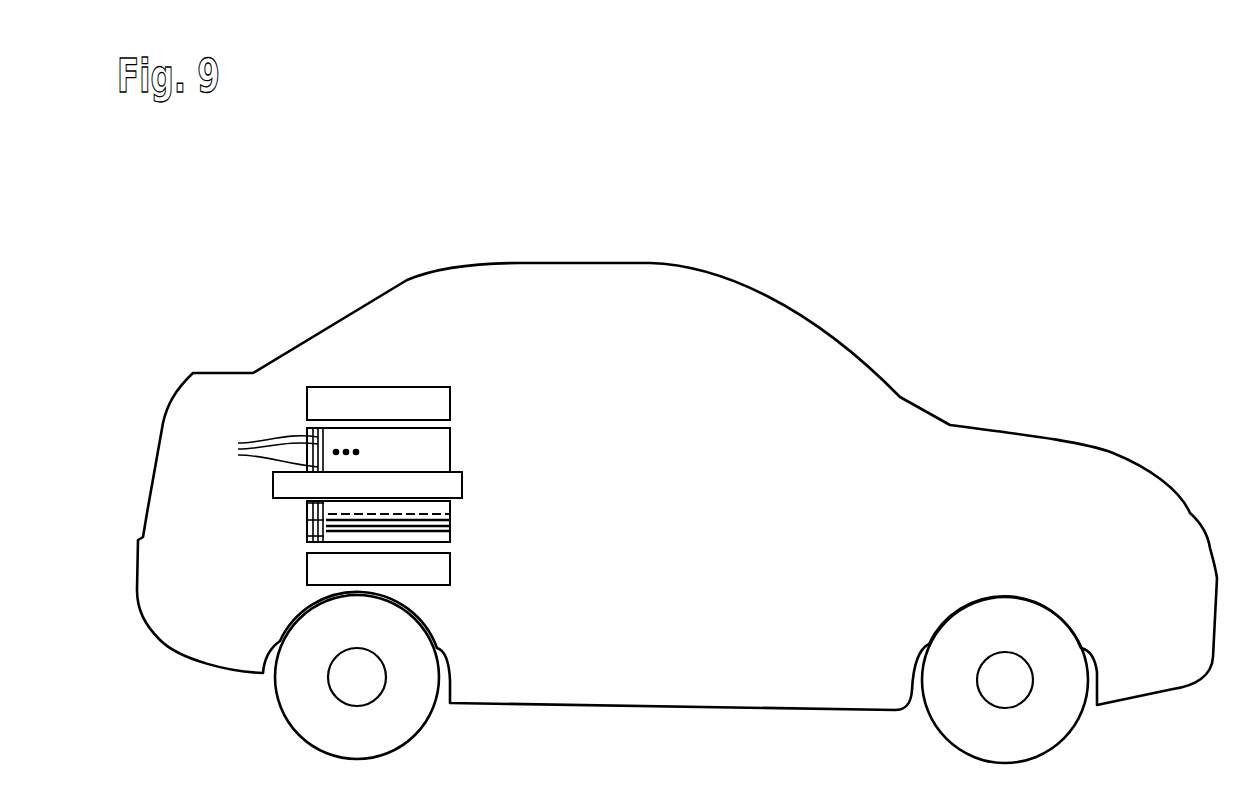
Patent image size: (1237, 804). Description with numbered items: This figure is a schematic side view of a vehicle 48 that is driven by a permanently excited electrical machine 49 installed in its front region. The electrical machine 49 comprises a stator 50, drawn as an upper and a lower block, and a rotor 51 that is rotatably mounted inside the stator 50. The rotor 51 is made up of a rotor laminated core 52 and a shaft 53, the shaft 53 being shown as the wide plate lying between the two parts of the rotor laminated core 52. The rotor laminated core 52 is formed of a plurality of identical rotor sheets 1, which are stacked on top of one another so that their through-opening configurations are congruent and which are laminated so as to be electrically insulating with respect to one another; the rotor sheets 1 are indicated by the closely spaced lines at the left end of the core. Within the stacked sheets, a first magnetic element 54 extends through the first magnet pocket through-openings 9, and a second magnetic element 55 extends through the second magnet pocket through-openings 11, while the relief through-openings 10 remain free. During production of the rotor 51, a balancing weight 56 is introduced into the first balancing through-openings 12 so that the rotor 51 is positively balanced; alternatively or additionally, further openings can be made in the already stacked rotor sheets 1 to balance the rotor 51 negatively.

The vehicle 48 is at (573, 262).
The electrical machine 49 is at (388, 467).
The stator 50 is at (400, 387).
The rotor 51 is at (384, 433).
The rotor laminated core 52 is at (384, 433).
The shaft 53 is at (462, 490).
The rotor sheet 1 is at (270, 451).
The first balancing through-opening 12 is at (455, 506).
The relief through-opening 10 is at (455, 515).
The first magnet pocket through-opening 9 is at (455, 524).
The second magnet pocket through-opening 11 is at (455, 533).
The first magnetic element 54 is at (312, 520).
The second magnetic element 55 is at (312, 536).
The balancing weight 56 is at (312, 504).